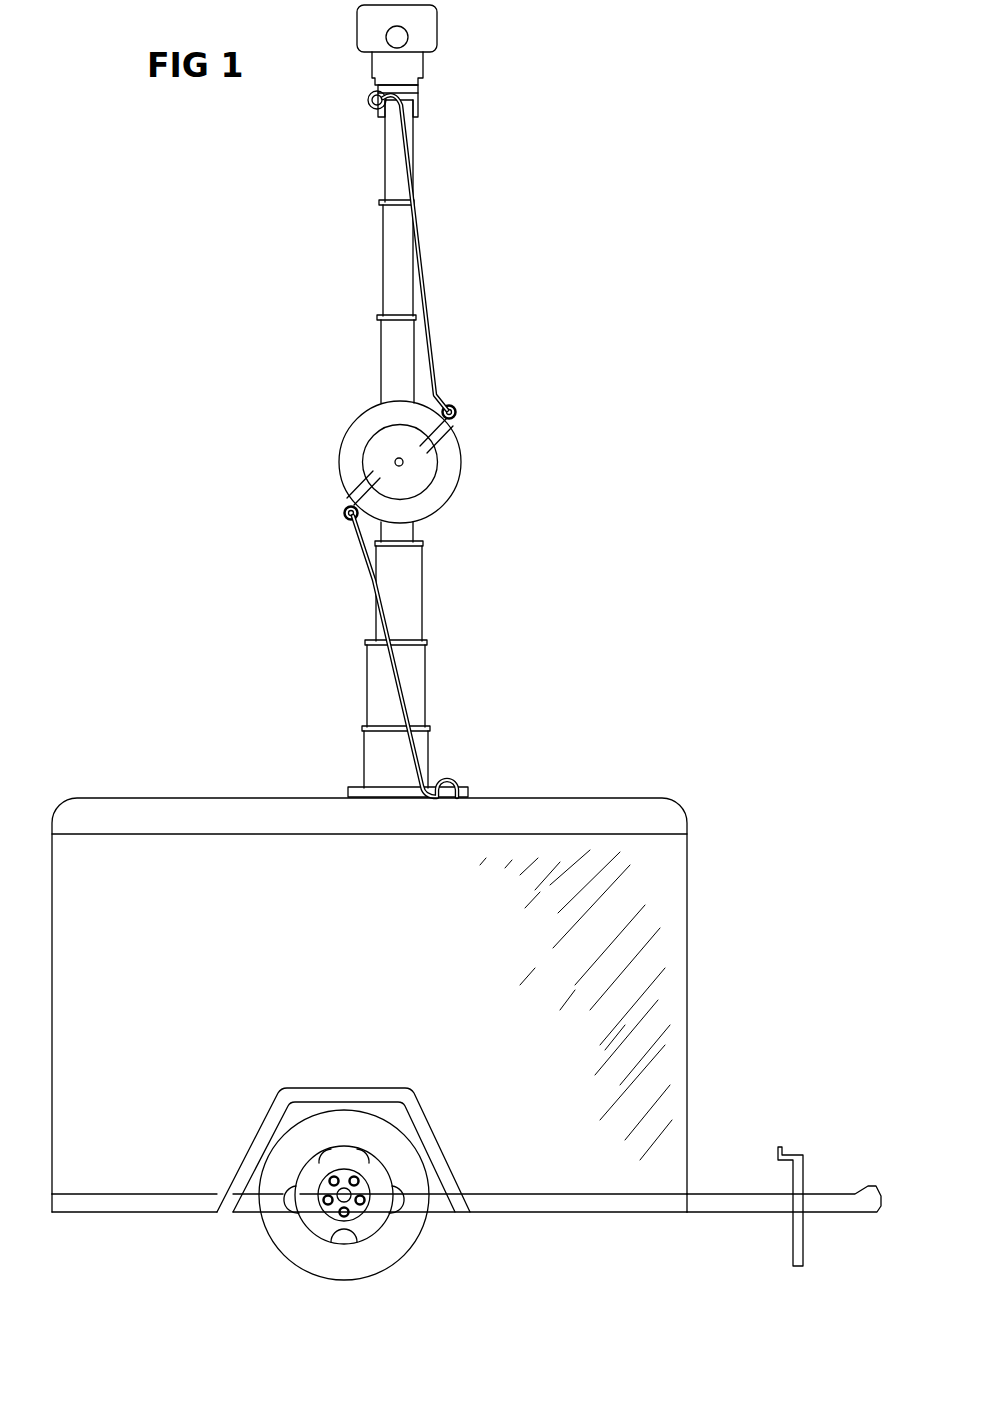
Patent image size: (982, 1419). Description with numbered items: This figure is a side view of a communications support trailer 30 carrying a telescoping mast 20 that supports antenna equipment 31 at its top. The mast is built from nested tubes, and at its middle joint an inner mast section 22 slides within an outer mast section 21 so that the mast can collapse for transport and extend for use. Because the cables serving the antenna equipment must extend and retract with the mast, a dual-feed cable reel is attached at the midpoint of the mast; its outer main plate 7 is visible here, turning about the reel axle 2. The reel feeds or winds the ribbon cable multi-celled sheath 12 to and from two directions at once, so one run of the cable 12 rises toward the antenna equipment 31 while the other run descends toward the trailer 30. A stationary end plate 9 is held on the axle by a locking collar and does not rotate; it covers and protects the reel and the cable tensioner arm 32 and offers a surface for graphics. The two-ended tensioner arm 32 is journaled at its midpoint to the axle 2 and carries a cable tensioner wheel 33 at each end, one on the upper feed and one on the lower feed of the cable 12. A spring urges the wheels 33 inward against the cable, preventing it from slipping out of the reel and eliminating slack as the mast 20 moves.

The antenna equipment 31 is at (455, 63).
The telescoping mast 20 is at (389, 441).
The inner mast section at middle joint of mast 22 is at (388, 353).
The ribbon cable multi-celled sheath 12 is at (430, 353).
The cable tensioner wheel 33 is at (456, 410).
The outer main plate of reel 7 is at (352, 438).
The reel axle 2 is at (405, 460).
The cable tensioner arm 32 is at (370, 497).
The end plate 9 is at (418, 470).
The outer mast section at middle joint of mast 21 is at (418, 527).
The communications support trailer 30 is at (371, 946).